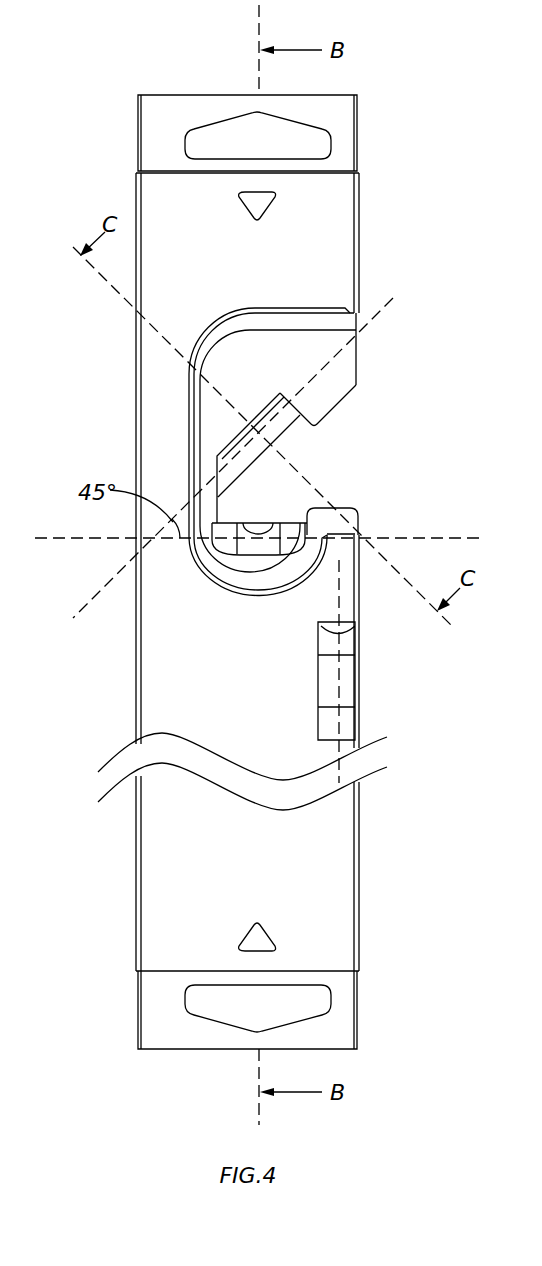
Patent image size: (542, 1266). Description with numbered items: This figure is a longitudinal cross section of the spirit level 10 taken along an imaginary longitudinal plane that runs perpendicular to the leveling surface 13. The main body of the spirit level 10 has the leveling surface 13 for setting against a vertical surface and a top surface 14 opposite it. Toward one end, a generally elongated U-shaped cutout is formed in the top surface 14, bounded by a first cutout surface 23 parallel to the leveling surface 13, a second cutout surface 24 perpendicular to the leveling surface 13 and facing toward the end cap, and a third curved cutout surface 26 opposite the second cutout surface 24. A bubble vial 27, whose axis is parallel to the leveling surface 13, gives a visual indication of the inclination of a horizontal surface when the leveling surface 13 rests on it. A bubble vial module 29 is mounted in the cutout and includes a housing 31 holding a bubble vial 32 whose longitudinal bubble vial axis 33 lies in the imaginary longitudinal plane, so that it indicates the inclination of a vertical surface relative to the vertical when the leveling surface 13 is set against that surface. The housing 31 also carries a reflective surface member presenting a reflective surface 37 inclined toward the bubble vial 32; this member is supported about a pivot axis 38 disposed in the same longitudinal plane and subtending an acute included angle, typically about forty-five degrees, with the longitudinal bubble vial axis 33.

The spirit level 10 is at (137, 55).
The leveling surface 13 is at (136, 712).
The top surface 14 is at (360, 878).
The first cutout surface 23 is at (189, 442).
The second cutout surface 24 is at (310, 307).
The third curved cutout surface 26 is at (210, 580).
The bubble vial 27 is at (348, 675).
The bubble vial module 29 is at (305, 356).
The housing 31 is at (207, 393).
The bubble vial 32 is at (258, 525).
The longitudinal bubble vial axis 33 is at (420, 537).
The reflective surface 37 is at (283, 436).
The pivot axis 38 is at (383, 308).